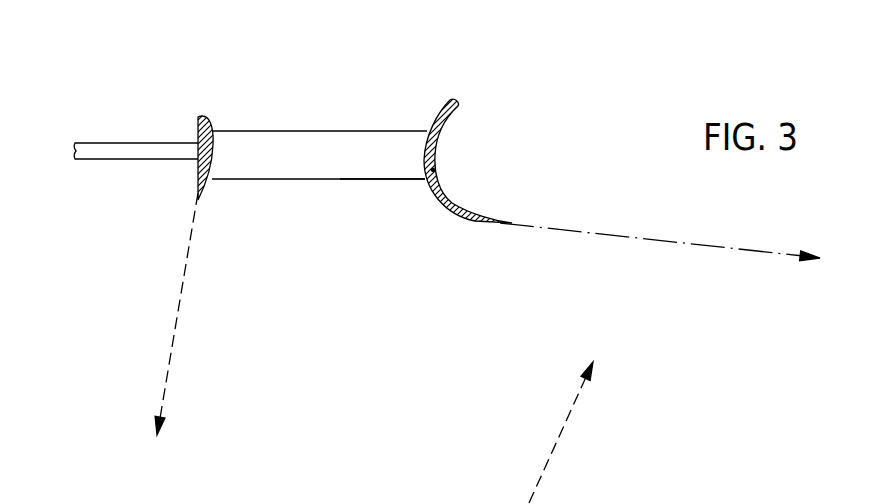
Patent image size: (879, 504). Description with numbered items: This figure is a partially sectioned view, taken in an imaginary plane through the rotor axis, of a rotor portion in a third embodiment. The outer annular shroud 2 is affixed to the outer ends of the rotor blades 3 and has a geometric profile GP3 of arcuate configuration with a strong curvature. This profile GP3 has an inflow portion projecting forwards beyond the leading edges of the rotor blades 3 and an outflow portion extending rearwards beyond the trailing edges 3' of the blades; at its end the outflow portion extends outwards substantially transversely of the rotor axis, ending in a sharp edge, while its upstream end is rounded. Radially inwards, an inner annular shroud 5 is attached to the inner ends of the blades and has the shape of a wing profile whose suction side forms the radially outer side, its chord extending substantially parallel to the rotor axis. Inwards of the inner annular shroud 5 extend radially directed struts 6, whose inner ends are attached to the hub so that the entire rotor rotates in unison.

The outer annular shroud 2 is at (438, 102).
The rotor blades 3 is at (319, 118).
The trailing edges 3' is at (382, 206).
The inner annular shroud 5 is at (197, 163).
The struts 6 is at (128, 152).
The geometric profile GP3 is at (433, 170).